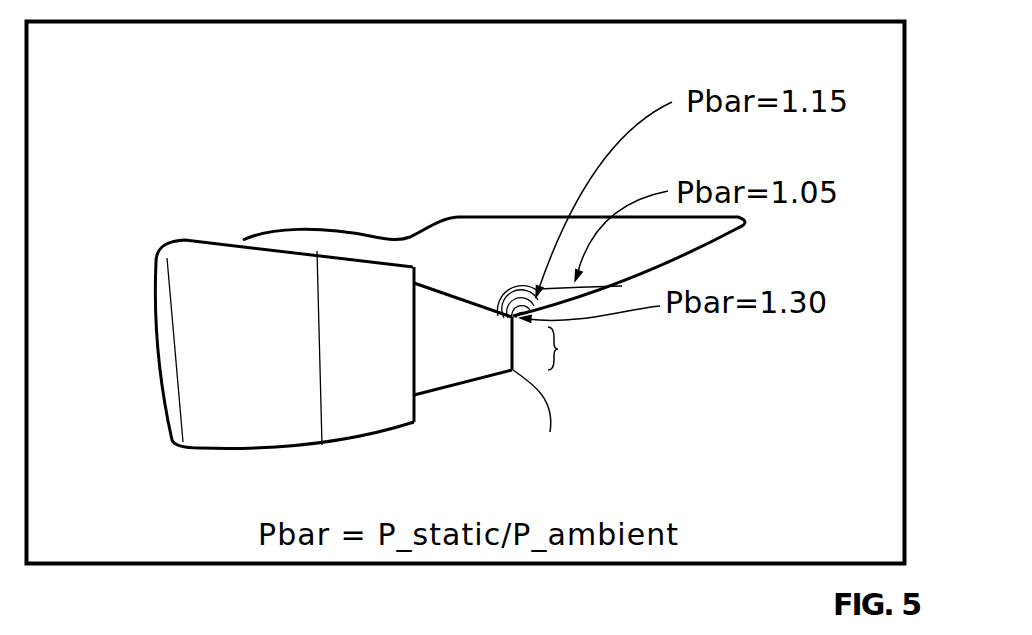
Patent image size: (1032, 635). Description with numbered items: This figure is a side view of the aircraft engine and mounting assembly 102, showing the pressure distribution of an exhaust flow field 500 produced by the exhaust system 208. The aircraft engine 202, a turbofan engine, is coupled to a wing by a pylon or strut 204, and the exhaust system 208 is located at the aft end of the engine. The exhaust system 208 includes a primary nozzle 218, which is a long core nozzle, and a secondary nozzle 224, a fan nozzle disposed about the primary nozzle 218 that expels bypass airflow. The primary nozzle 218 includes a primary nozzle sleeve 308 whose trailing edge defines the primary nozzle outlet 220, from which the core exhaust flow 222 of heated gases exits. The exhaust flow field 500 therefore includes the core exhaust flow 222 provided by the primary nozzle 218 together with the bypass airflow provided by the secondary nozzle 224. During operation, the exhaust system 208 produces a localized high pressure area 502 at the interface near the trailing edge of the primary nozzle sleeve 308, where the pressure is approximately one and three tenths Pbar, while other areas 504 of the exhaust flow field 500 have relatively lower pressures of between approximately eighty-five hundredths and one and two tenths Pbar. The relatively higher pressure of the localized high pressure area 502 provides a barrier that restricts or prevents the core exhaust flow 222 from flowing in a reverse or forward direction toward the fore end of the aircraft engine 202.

The aircraft engine and mounting assembly 102 is at (175, 163).
The aircraft engine 202 is at (258, 250).
The pylon or strut 204 is at (556, 212).
The exhaust system 208 is at (513, 438).
The primary nozzle 218 is at (496, 395).
The primary nozzle outlet 220 is at (517, 371).
The core exhaust flow 222 is at (578, 348).
The secondary nozzle 224 is at (412, 405).
The primary nozzle sleeve 308 is at (544, 415).
The exhaust flow field 500 is at (523, 272).
The localized high pressure area 502 is at (523, 331).
The other areas 504 is at (600, 272).